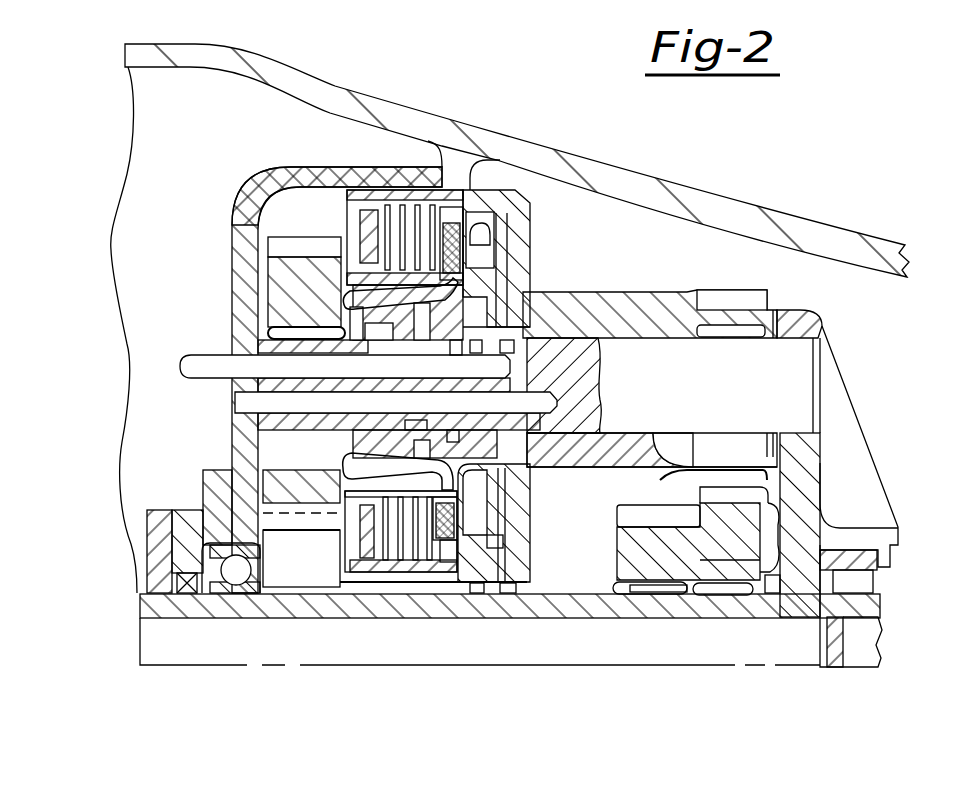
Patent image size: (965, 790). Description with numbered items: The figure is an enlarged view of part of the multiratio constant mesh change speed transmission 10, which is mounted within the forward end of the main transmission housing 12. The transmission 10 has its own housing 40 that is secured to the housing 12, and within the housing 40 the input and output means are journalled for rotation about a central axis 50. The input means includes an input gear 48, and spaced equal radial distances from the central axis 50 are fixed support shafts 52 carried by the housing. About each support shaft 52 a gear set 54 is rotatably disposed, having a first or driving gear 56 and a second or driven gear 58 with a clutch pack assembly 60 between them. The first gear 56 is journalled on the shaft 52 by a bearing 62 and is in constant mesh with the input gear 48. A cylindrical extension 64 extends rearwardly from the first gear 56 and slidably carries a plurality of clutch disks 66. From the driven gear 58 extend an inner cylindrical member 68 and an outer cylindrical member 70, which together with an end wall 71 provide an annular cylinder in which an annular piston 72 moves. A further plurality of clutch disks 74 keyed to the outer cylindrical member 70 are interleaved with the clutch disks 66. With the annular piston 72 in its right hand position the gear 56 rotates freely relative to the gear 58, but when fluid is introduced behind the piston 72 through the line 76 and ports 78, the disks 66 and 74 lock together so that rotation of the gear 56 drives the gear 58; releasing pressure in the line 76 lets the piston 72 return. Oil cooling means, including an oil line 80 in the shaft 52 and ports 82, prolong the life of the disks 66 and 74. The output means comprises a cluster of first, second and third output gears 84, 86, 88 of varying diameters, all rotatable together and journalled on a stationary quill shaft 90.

The multiratio constant mesh change speed transmission 10 is at (280, 146).
The housing 12 is at (388, 96).
The housing 40 is at (260, 188).
The input gear 48 is at (283, 577).
The central axis 50 is at (333, 665).
The fixed support shaft 52 is at (563, 340).
The gear set 54 is at (559, 229).
The first or driving gear 56 is at (283, 273).
The second or driven gear 58 is at (717, 297).
The clutch pack assembly 60 is at (487, 177).
The bearing 62 is at (277, 331).
The cylindrical extension 64 is at (375, 278).
The clutch disk 66 is at (455, 517).
The inner cylindrical member 68 is at (443, 330).
The outer cylindrical member 70 is at (517, 190).
The end wall 71 is at (540, 197).
The annular piston 72 is at (493, 267).
The clutch disk 74 is at (447, 565).
The line 76 is at (195, 375).
The port 78 is at (497, 321).
The oil line 80 is at (247, 400).
The port 82 is at (420, 460).
The first output gear 84 is at (620, 467).
The second output gear 86 is at (655, 510).
The third output gear 88 is at (732, 490).
The stationary quill shaft 90 is at (700, 607).